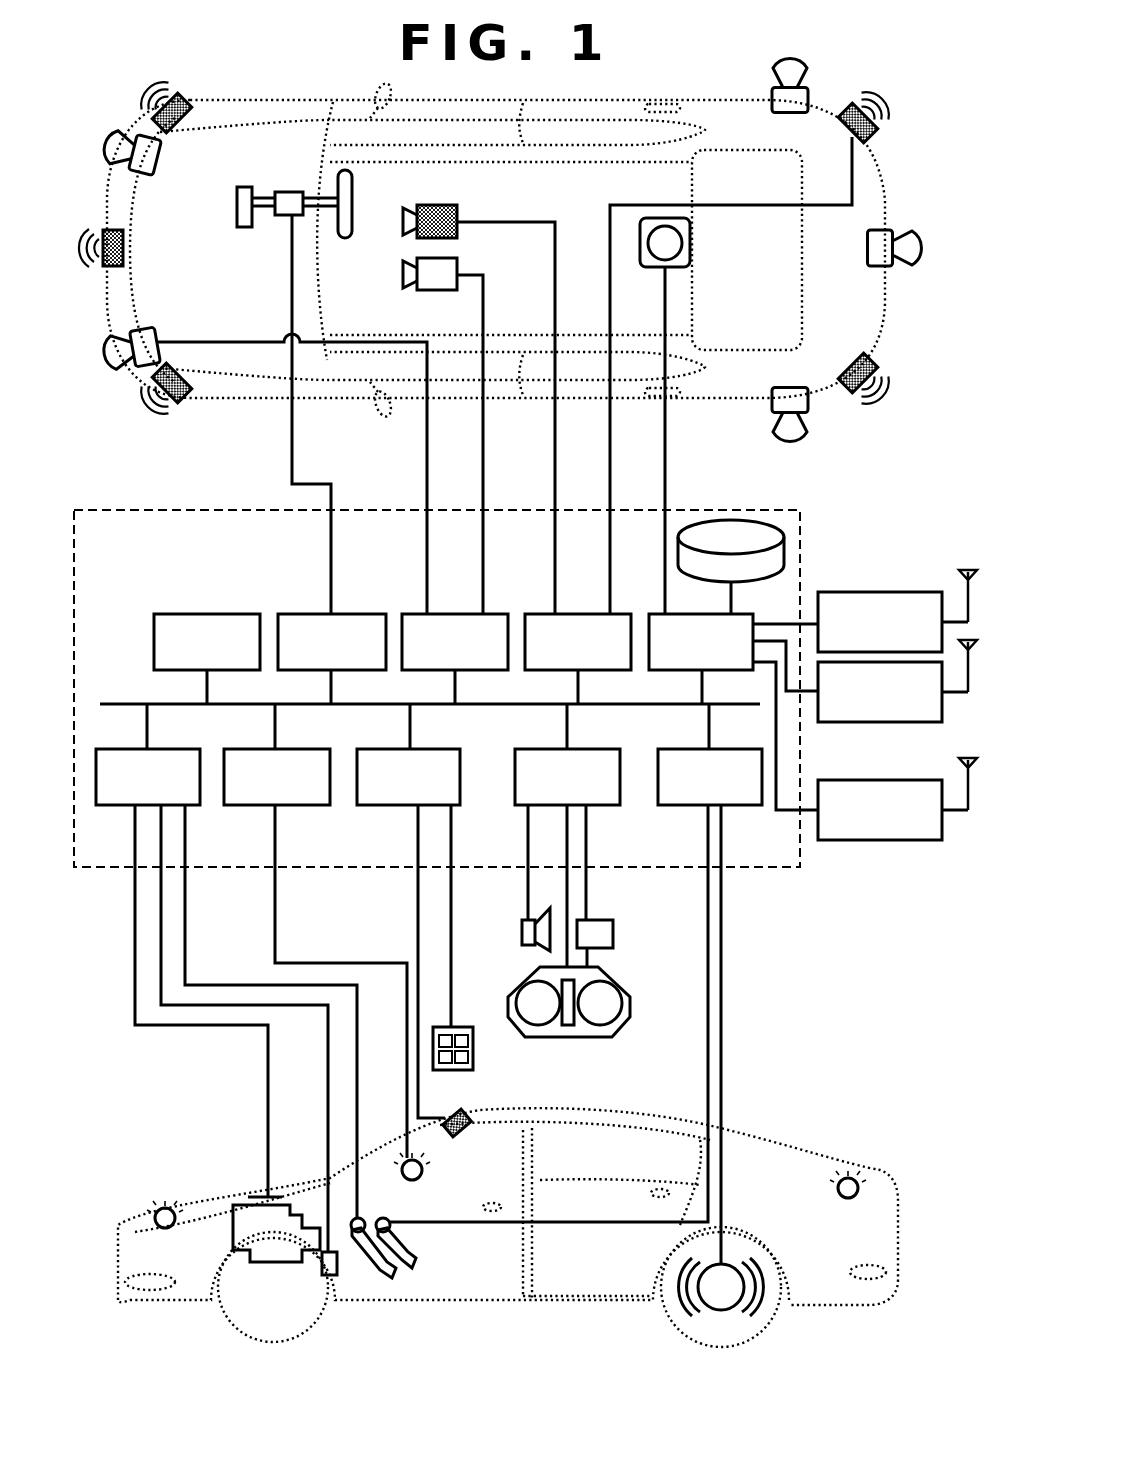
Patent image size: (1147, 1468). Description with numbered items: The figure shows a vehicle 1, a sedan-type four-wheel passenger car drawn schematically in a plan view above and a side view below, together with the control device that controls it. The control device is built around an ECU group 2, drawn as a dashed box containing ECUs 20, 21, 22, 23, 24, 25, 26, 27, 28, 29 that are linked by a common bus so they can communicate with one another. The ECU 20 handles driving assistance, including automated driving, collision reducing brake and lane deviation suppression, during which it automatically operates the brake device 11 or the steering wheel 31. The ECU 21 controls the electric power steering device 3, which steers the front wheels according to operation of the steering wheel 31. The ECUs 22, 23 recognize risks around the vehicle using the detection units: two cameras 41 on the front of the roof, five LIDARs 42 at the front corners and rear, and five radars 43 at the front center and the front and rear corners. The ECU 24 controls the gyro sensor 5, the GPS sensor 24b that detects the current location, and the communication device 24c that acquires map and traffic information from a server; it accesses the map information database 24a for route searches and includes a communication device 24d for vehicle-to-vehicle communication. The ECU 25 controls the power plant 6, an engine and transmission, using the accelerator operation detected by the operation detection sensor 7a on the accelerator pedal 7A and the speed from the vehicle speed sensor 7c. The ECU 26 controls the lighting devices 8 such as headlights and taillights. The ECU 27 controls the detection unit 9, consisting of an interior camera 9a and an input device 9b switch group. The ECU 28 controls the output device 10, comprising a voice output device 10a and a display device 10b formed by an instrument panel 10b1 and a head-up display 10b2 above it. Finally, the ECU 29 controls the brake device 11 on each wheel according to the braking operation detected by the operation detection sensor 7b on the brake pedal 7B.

The vehicle 1 is at (896, 156).
The ECU group 2 is at (108, 508).
The electric power steering device 3 is at (245, 230).
The steering wheel 31 is at (345, 240).
The camera 41 is at (458, 230).
The LIDAR 42 is at (772, 108).
The radar 43 is at (186, 104).
The gyro sensor 5 is at (690, 243).
The ECU 20 is at (234, 612).
The ECU 21 is at (356, 612).
The ECU 22 is at (453, 612).
The ECU 23 is at (585, 612).
The ECU 24 is at (652, 612).
The map information database 24a is at (738, 521).
The GPS sensor 24b is at (900, 592).
The communication device 24c is at (890, 724).
The communication device 24d is at (890, 842).
The ECU 25 is at (110, 806).
The ECU 26 is at (238, 806).
The ECU 27 is at (370, 806).
The ECU 28 is at (606, 806).
The ECU 29 is at (745, 806).
The power plant 6 is at (240, 1203).
The accelerator pedal 7A is at (397, 1270).
The brake pedal 7B is at (415, 1256).
The operation detection sensor 7a is at (363, 1215).
The operation detection sensor 7b is at (390, 1220).
The vehicle speed sensor 7c is at (330, 1280).
The lighting device 8 is at (155, 1215).
The detection unit 9 is at (491, 1060).
The camera 9a is at (496, 1079).
The input device 9b is at (462, 1028).
The output device 10 is at (633, 1040).
The voice output device 10a is at (522, 932).
The display device 10b is at (655, 960).
The instrument panel 10b1 is at (596, 993).
The head-up display 10b2 is at (617, 928).
The brake device 11 is at (728, 1312).